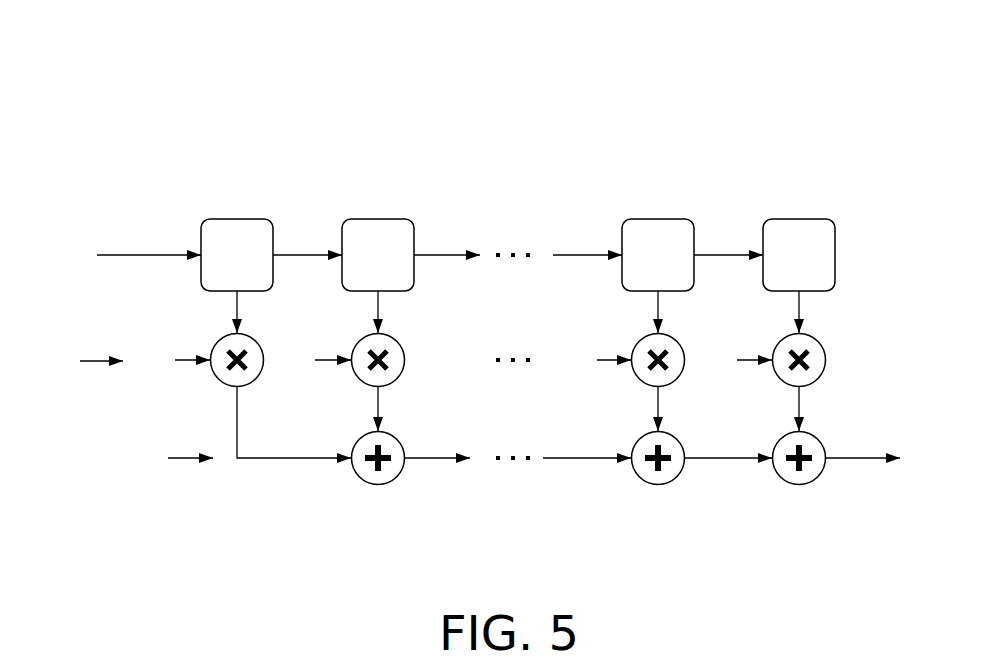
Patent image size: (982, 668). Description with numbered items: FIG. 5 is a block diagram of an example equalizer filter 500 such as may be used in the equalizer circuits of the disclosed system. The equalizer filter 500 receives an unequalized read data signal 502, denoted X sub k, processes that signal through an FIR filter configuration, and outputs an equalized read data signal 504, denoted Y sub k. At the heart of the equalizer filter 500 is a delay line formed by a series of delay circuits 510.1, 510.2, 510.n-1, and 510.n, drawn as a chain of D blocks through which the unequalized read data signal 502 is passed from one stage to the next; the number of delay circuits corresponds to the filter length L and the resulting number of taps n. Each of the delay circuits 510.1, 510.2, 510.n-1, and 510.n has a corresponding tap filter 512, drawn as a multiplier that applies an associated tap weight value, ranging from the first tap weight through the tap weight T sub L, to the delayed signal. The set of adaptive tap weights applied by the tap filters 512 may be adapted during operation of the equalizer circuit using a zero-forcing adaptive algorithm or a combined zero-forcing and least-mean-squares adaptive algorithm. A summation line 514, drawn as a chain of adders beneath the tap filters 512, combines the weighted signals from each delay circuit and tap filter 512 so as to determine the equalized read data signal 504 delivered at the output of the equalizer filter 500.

The equalizer filter 500 is at (112, 75).
The unequalized read data signal 502 is at (80, 218).
The equalized read data signal 504 is at (848, 495).
The delay circuit 510.1 is at (236, 219).
The delay circuit 510.2 is at (385, 219).
The delay circuit 510.n-1 is at (652, 219).
The delay circuit 510.n is at (795, 219).
The tap filter 512 is at (76, 372).
The summation line 514 is at (165, 461).